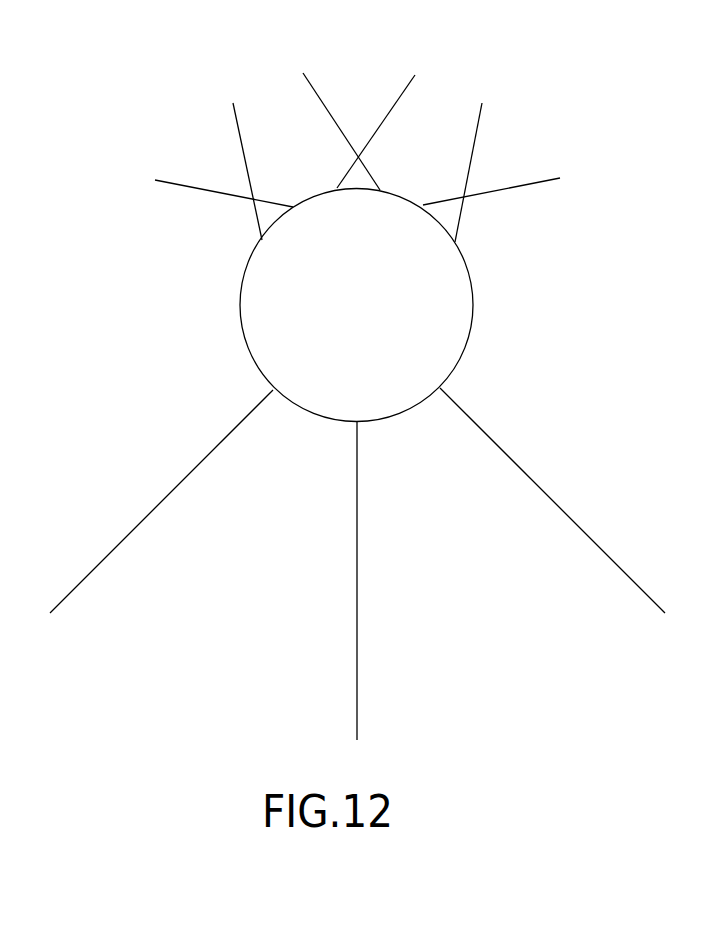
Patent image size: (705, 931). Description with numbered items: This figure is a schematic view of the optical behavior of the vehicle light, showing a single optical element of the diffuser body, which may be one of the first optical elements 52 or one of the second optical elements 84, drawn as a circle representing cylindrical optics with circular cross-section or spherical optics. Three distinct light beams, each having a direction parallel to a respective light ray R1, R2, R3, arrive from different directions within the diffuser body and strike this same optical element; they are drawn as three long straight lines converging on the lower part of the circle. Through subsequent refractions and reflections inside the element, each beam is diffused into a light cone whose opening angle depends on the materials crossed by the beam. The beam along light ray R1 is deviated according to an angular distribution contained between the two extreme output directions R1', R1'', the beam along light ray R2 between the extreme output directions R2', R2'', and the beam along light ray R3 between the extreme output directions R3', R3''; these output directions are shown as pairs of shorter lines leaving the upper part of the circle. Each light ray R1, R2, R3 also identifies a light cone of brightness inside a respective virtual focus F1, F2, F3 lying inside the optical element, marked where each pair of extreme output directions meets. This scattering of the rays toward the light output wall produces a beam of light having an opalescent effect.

The first optical elements 52 is at (247, 307).
The second optical elements 84 is at (273, 320).
The light ray R1 is at (161, 531).
The light ray R2 is at (387, 605).
The light ray R3 is at (552, 530).
The extreme output direction R1' is at (514, 182).
The extreme output direction R1'' is at (493, 150).
The extreme output direction R2' is at (388, 102).
The extreme output direction R2'' is at (330, 103).
The extreme output direction R3' is at (227, 143).
The extreme output direction R3'' is at (199, 167).
The virtual focus F1 is at (488, 220).
The virtual focus F2 is at (387, 153).
The virtual focus F3 is at (272, 175).